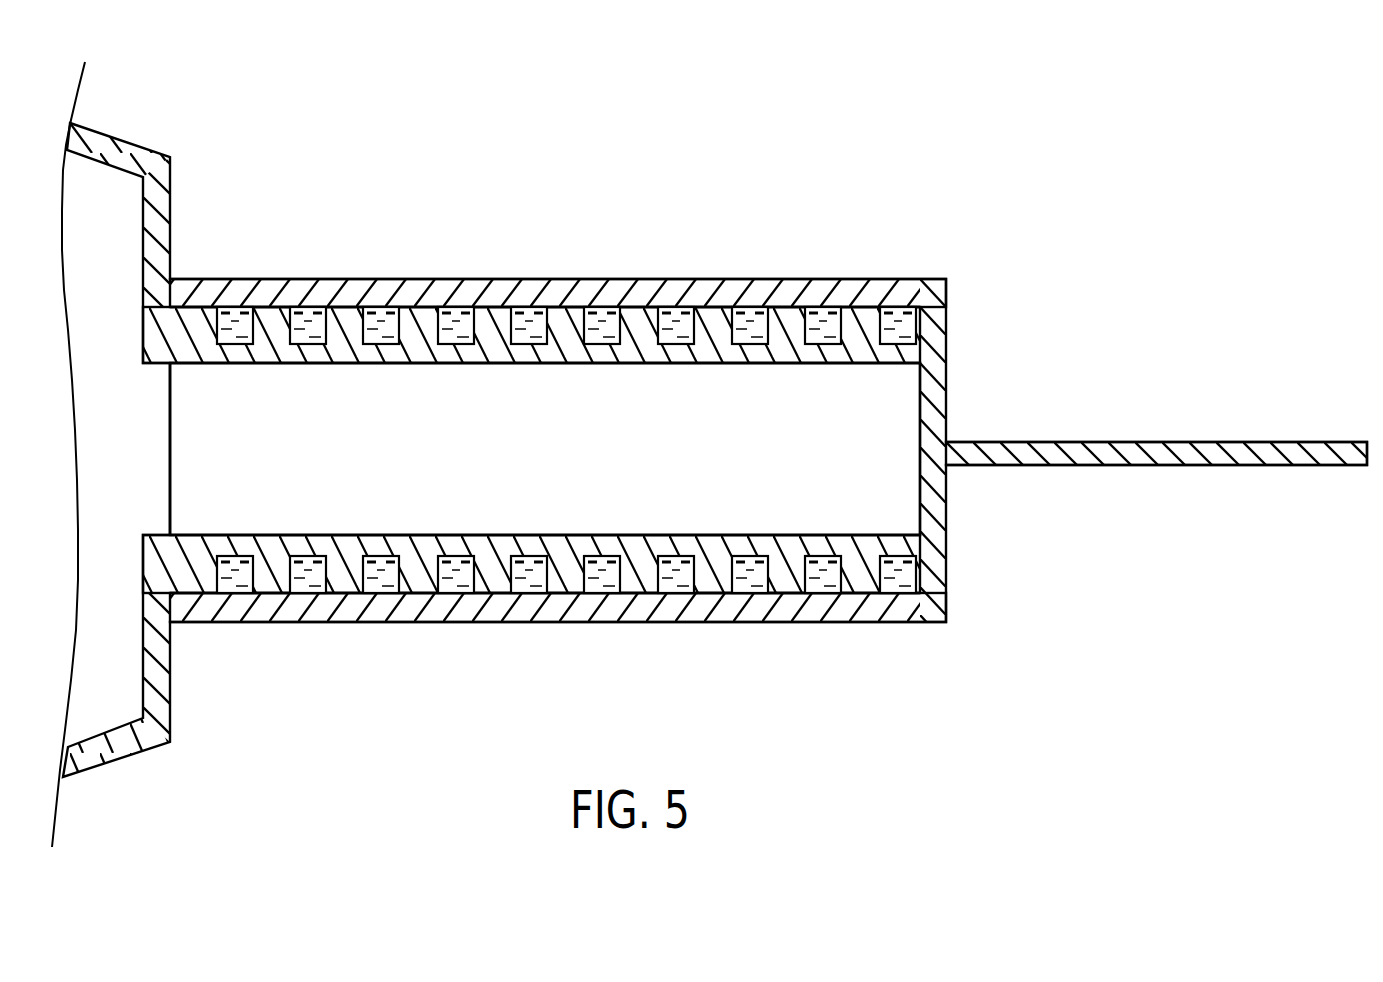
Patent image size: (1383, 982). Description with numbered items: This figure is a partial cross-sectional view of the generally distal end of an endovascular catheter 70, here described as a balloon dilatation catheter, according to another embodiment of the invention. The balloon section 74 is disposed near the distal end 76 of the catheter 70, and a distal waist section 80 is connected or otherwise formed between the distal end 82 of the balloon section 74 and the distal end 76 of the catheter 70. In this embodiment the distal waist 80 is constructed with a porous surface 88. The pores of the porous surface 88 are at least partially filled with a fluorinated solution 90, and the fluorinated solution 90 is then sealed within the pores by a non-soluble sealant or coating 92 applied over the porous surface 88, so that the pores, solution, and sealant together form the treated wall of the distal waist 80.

The endovascular catheter 70 is at (428, 144).
The balloon section 74 is at (104, 188).
The distal end 76 is at (1153, 468).
The distal waist section 80 is at (893, 517).
The distal end of the balloon section 82 is at (171, 513).
The porous surface 88 is at (930, 331).
The fluorinated solution 90 is at (241, 308).
The non-soluble sealant or coating 92 is at (887, 291).